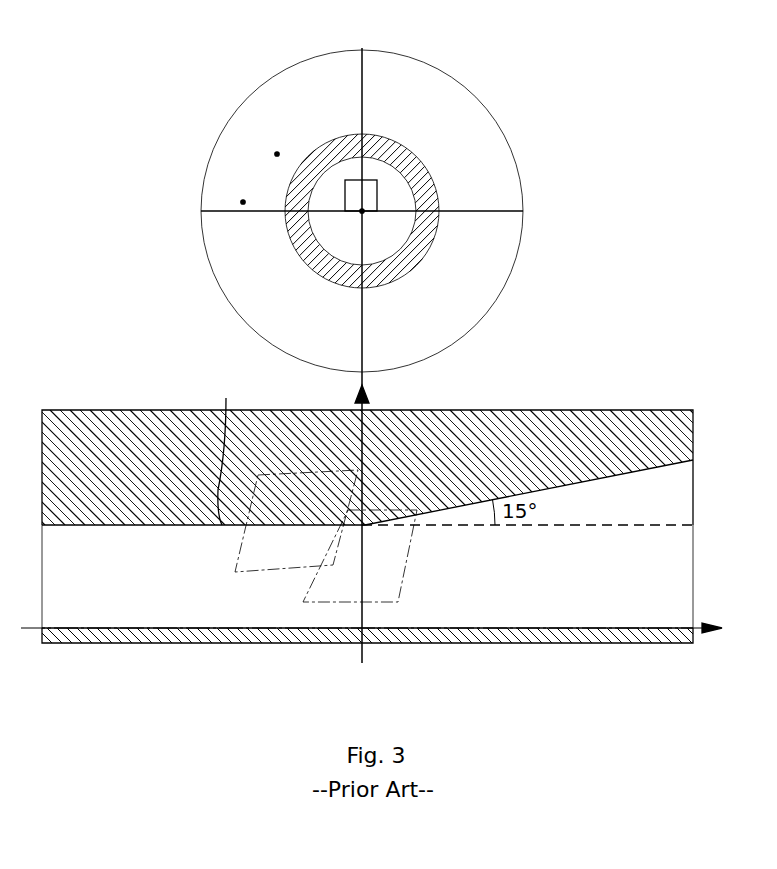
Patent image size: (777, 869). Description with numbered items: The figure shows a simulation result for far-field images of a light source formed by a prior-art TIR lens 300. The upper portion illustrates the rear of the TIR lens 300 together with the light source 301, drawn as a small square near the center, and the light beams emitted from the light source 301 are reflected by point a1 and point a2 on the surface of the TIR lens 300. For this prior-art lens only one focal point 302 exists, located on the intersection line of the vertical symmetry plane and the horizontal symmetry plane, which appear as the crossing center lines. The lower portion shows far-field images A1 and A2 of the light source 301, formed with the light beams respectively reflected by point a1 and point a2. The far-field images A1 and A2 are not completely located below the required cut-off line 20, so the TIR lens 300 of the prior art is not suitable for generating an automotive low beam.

The TIR lens 300 is at (252, 104).
The light source 301 is at (358, 198).
The focal point 302 is at (362, 211).
The cut-off line 20 is at (525, 494).
The point a1 is at (240, 190).
The point a2 is at (277, 143).
The far-field image A1 is at (360, 556).
The far-field image A2 is at (296, 521).